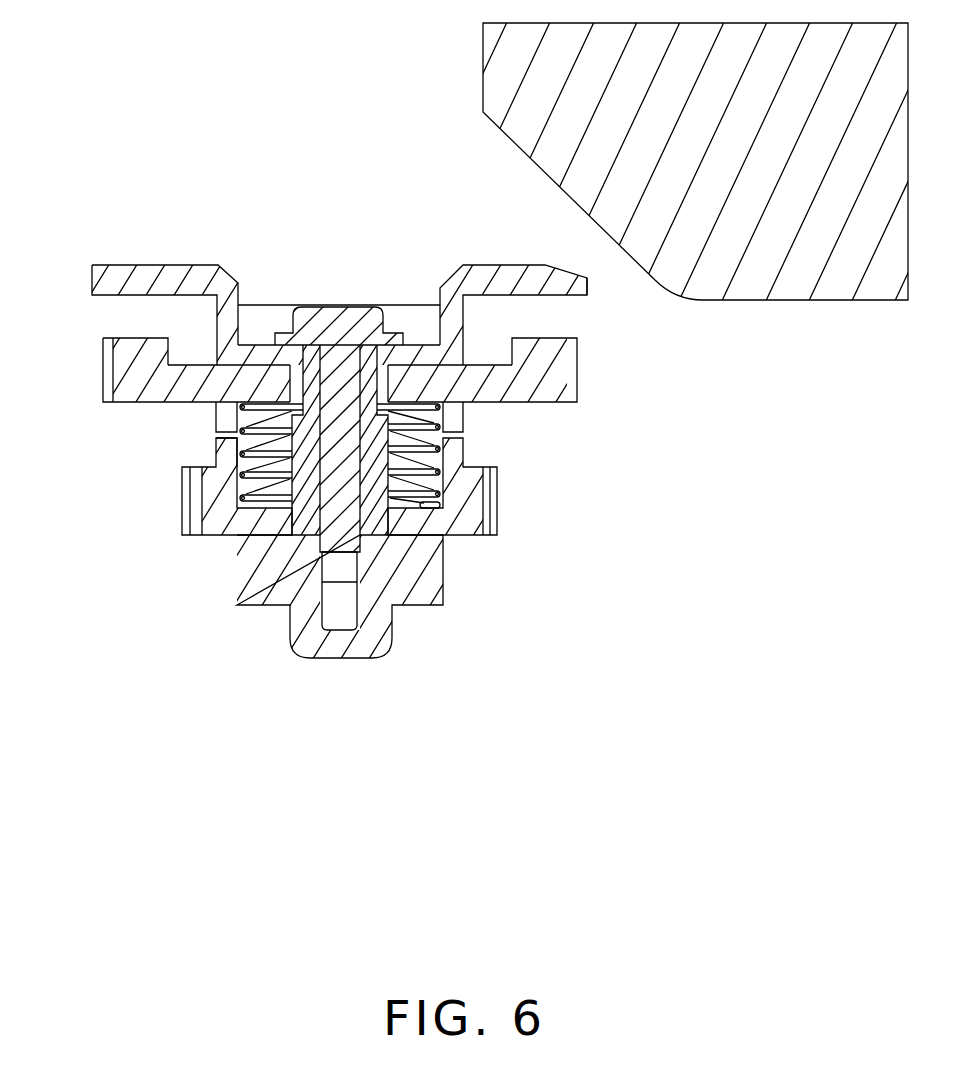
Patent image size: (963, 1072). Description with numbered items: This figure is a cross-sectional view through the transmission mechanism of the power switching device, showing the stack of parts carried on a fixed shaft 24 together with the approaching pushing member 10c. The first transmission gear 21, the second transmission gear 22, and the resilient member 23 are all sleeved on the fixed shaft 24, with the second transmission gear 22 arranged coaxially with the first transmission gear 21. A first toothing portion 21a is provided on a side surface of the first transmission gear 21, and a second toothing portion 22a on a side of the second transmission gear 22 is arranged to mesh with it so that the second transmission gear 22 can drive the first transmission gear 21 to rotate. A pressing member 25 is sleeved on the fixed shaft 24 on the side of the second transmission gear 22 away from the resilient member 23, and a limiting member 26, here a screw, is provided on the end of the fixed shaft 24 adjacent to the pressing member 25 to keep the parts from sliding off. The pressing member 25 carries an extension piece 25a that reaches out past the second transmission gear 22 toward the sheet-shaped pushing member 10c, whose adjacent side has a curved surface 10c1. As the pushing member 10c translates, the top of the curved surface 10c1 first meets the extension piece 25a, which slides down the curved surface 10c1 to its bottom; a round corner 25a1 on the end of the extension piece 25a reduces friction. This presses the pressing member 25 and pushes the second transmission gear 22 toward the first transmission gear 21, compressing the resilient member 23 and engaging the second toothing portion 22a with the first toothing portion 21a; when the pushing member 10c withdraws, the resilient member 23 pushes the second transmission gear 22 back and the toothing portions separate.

The pushing member 10c is at (695, 234).
The curved surface 10c1 is at (679, 298).
The first transmission gear 21 is at (190, 503).
The first toothing portion 21a is at (222, 455).
The second transmission gear 22 is at (301, 397).
The second toothing portion 22a is at (223, 413).
The resilient member 23 is at (477, 503).
The fixed shaft 24 is at (417, 580).
The pressing member 25 is at (379, 282).
The extension piece 25a is at (553, 284).
The round corner 25a1 is at (592, 283).
The limiting member 26 is at (340, 330).